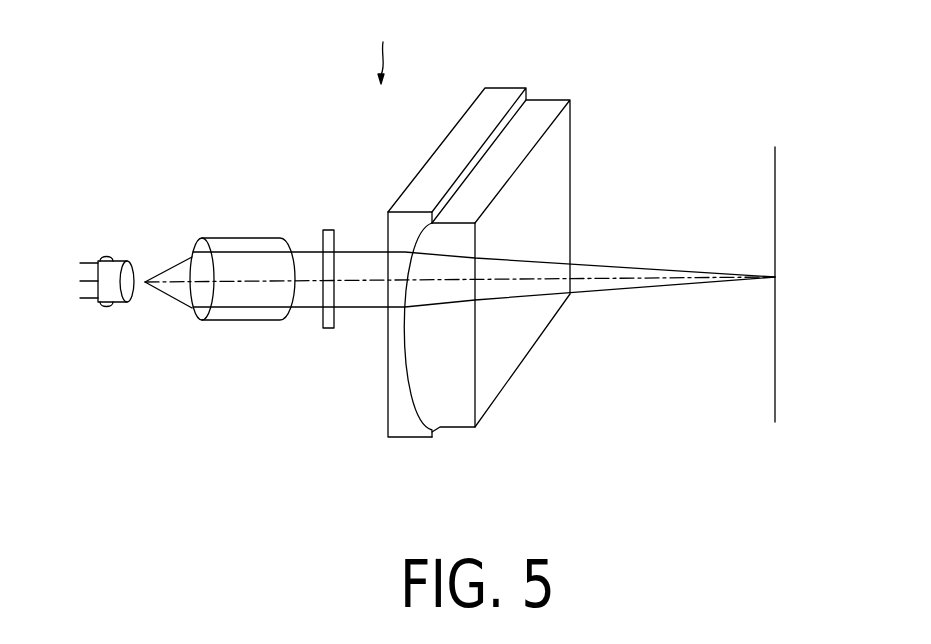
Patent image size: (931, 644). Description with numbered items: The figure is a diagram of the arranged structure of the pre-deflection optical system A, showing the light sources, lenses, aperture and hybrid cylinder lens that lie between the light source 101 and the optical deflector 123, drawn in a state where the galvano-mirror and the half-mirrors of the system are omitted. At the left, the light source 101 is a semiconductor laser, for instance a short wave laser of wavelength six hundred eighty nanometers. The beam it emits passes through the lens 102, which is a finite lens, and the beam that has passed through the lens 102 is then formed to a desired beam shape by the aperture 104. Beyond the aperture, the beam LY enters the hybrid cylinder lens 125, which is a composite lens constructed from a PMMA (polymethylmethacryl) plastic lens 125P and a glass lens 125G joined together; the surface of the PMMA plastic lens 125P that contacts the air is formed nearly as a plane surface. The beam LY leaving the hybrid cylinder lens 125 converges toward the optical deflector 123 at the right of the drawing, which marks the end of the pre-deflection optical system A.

The light source 101 is at (121, 255).
The lens 102 is at (253, 237).
The aperture 104 is at (333, 228).
The light beam LY is at (622, 263).
The hybrid cylinder lens 125 is at (487, 268).
The PMMA plastic lens 125P is at (437, 150).
The glass lens 125G is at (550, 110).
The pre-deflection optical system A is at (381, 42).
The optical deflector 123 is at (775, 405).